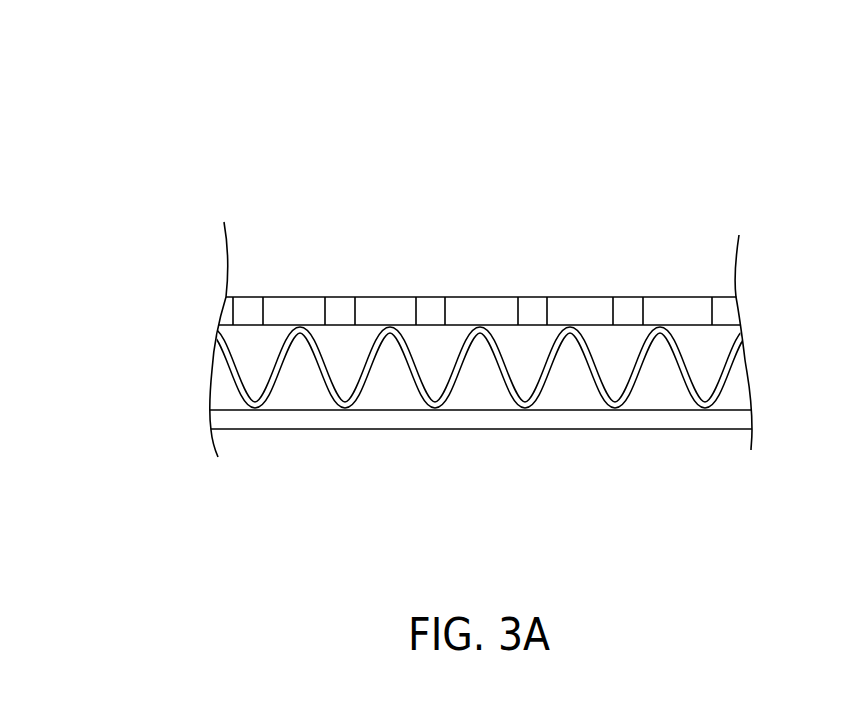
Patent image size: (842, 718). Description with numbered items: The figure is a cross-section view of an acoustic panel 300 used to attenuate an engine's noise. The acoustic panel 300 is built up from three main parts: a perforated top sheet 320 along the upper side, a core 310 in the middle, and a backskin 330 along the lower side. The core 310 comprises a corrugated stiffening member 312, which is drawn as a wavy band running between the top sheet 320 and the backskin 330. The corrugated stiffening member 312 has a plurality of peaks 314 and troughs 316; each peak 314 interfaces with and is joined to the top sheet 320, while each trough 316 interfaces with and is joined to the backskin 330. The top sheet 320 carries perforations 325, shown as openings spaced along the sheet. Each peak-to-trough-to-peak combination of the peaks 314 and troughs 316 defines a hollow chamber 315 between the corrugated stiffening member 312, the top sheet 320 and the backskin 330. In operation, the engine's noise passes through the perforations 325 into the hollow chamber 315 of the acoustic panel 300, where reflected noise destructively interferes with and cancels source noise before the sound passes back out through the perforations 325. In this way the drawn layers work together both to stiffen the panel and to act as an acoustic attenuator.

The acoustic panel 300 is at (153, 72).
The core 310 is at (320, 392).
The corrugated stiffening member 312 is at (510, 392).
The peaks 314 is at (502, 359).
The hollow chamber 315 is at (418, 406).
The troughs 316 is at (262, 407).
The perforated top sheet 320 is at (458, 294).
The perforations 325 is at (631, 293).
The backskin 330 is at (423, 420).